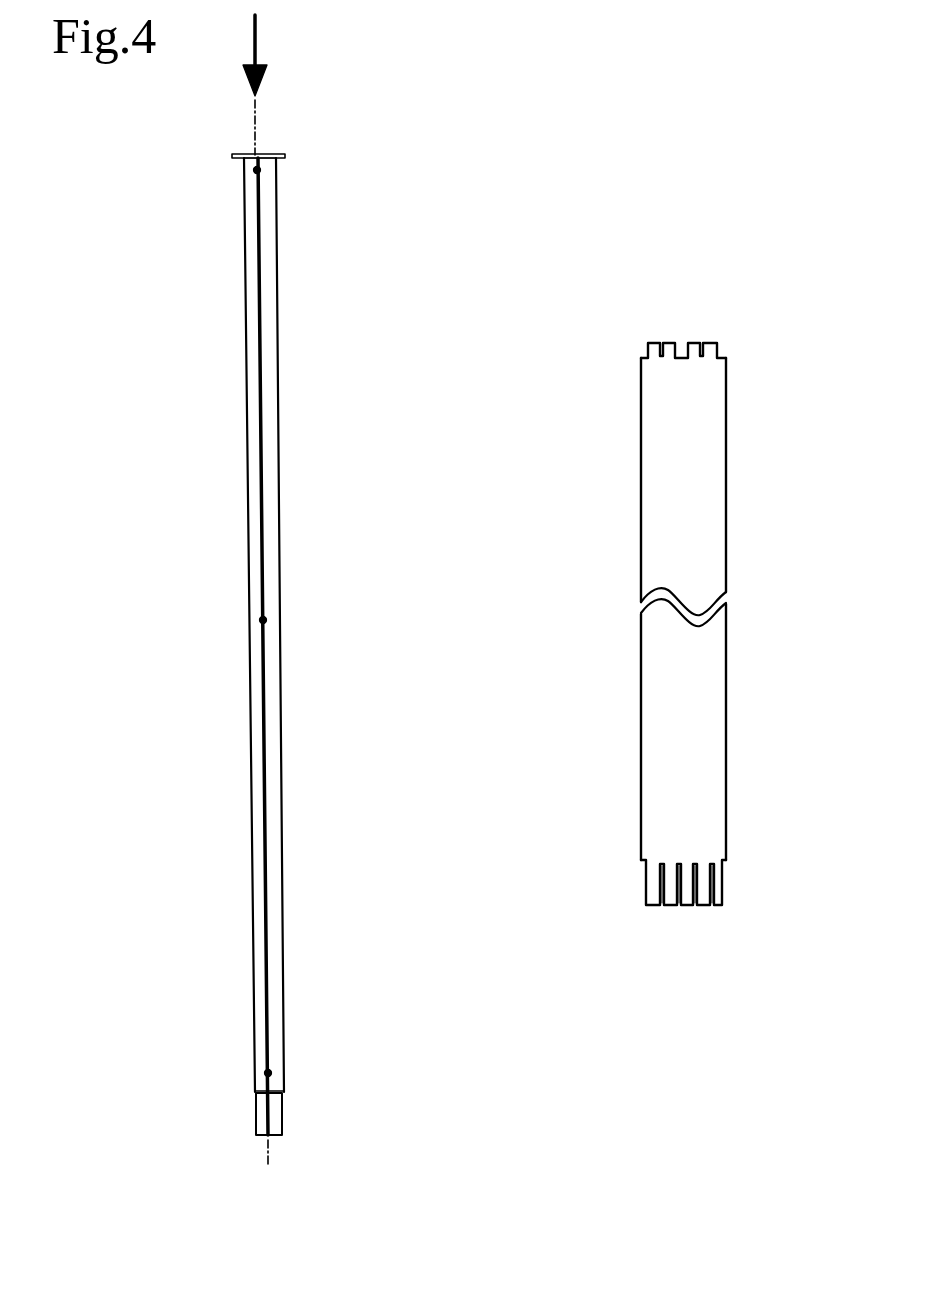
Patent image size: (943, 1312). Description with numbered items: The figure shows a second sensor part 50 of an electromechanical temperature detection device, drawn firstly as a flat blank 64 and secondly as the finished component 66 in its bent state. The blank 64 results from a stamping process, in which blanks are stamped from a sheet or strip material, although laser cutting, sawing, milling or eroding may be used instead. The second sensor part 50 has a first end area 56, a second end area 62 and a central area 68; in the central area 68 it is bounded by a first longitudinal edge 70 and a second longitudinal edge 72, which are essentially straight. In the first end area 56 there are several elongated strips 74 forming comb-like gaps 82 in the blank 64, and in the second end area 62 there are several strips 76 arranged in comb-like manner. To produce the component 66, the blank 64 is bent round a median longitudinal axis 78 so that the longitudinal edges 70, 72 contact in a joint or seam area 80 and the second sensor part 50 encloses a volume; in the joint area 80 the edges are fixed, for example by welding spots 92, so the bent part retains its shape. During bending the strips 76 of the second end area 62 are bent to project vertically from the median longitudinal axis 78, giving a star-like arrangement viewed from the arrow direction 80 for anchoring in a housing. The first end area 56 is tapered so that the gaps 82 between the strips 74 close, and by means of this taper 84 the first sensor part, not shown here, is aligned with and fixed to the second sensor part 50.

The second sensor part 50 is at (535, 203).
The first end area 56 is at (645, 893).
The second end area 62 is at (648, 345).
The blank 64 is at (641, 458).
The finished component 66 is at (277, 380).
The central area 68 is at (643, 660).
The first longitudinal edge 70 is at (641, 557).
The second longitudinal edge 72 is at (726, 568).
The elongated strips 74 is at (685, 905).
The strips 76 is at (668, 343).
The median longitudinal axis 78 is at (258, 130).
The joint or seam area 80 is at (258, 45).
The gaps 82 is at (702, 867).
The taper 84 is at (248, 1121).
The welding spots 92 is at (257, 170).